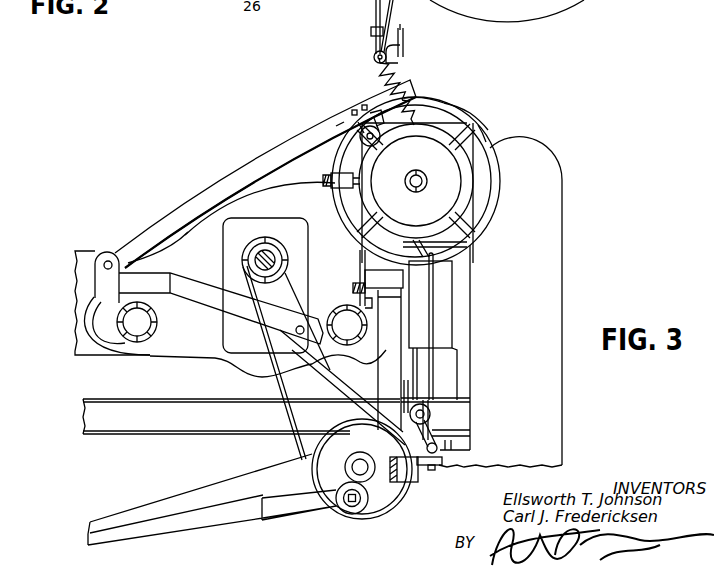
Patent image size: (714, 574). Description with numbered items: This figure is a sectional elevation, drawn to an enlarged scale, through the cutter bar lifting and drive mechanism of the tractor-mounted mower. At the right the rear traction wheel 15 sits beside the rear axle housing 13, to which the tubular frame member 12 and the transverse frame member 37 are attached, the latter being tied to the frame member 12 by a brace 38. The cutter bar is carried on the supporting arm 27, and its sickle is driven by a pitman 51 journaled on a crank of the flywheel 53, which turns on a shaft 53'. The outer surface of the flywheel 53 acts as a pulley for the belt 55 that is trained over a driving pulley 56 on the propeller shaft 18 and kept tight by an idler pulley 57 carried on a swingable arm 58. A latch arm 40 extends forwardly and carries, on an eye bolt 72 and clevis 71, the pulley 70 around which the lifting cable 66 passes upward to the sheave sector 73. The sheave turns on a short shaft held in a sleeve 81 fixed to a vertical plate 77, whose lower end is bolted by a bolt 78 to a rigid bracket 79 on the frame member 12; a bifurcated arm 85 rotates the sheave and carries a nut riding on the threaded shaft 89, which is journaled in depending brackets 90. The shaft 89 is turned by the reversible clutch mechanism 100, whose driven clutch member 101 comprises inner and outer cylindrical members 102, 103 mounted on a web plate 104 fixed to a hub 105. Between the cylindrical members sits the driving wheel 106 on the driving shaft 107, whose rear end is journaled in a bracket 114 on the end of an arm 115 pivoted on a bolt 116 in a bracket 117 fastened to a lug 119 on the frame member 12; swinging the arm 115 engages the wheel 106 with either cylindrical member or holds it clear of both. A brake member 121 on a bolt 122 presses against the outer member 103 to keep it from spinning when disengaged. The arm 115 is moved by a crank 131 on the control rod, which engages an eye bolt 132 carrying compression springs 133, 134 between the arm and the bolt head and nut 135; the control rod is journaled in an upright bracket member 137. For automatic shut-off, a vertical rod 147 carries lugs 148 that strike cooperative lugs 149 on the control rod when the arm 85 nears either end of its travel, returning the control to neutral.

The tubular frame member 12 is at (157, 323).
The rear axle housing 13 is at (183, 226).
The rear traction wheel 15 is at (556, 186).
The propeller shaft 18 is at (283, 236).
The supporting arm 27 is at (180, 500).
The transverse frame member 37 is at (138, 422).
The brace 38 is at (380, 378).
The latch arm 40 is at (419, 484).
The pitman 51 is at (220, 520).
The flywheel 53 is at (362, 485).
The shaft 53' is at (382, 492).
The belt 55 is at (284, 413).
The driving pulley 56 is at (244, 256).
The idler pulley 57 is at (337, 313).
The arm 58 is at (257, 312).
The lifting cable 66 is at (434, 372).
The pulley 70 is at (430, 413).
The clevis 71 is at (440, 431).
The eye bolt 72 is at (444, 452).
The sheave sector 73 is at (448, 308).
The vertically extending plate 77 is at (361, 262).
The bolt 78 is at (358, 296).
The rigid bracket 79 is at (372, 306).
The sleeve 81 is at (378, 272).
The bifurcated arm 85 is at (446, 244).
The threaded shaft 89 is at (422, 178).
The depending bracket 90 is at (490, 200).
The reversible clutch mechanism 100 is at (449, 93).
The driven clutch member 101 is at (492, 120).
The inner cylindrical member 102 is at (417, 186).
The outer cylindrical member 103 is at (466, 113).
The web plate 104 is at (487, 140).
The hub 105 is at (422, 183).
The driving wheel 106 is at (340, 128).
The driving shaft 107 is at (358, 110).
The bracket 114 is at (372, 124).
The arm 115 is at (261, 158).
The bolt 116 is at (108, 259).
The bracket 117 is at (100, 283).
The lug 119 is at (118, 291).
The brake member 121 is at (330, 174).
The bolt 122 is at (324, 190).
The crank 131 is at (400, 52).
The eye bolt 132 is at (398, 26).
The compression spring 133 is at (396, 78).
The compression spring 134 is at (406, 96).
The nut 135 is at (432, 102).
The bracket member 137 is at (404, 41).
The vertically extending rod 147 is at (375, 6).
The lug 148 is at (371, 31).
The cooperative lug 149 is at (403, 36).